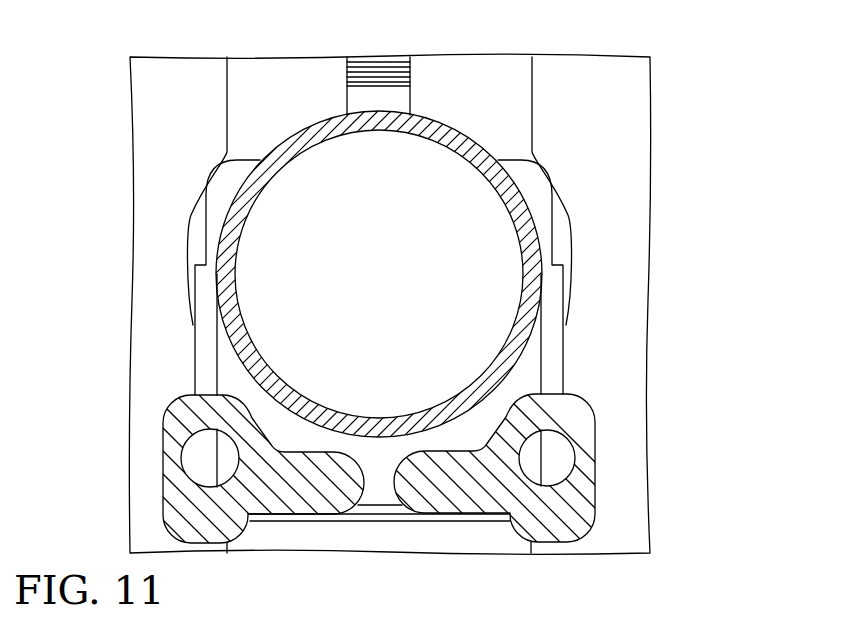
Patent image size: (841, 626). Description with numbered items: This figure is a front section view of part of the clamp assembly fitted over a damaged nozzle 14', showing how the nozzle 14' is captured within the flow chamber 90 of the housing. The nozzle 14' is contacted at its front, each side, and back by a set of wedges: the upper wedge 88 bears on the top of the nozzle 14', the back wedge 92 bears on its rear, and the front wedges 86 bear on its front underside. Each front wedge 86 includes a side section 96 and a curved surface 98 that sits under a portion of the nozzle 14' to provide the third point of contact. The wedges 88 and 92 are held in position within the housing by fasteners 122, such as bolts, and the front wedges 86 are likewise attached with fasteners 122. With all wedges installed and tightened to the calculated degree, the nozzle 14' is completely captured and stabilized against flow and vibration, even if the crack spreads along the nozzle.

The damaged nozzle 14' is at (396, 271).
The front wedge 86 is at (587, 458).
The upper wedge 88 is at (498, 78).
The flow chamber 90 is at (577, 115).
The back wedge 92 is at (208, 295).
The side section 96 is at (174, 431).
The curved surface 98 is at (275, 452).
The fastener 122 is at (388, 78).